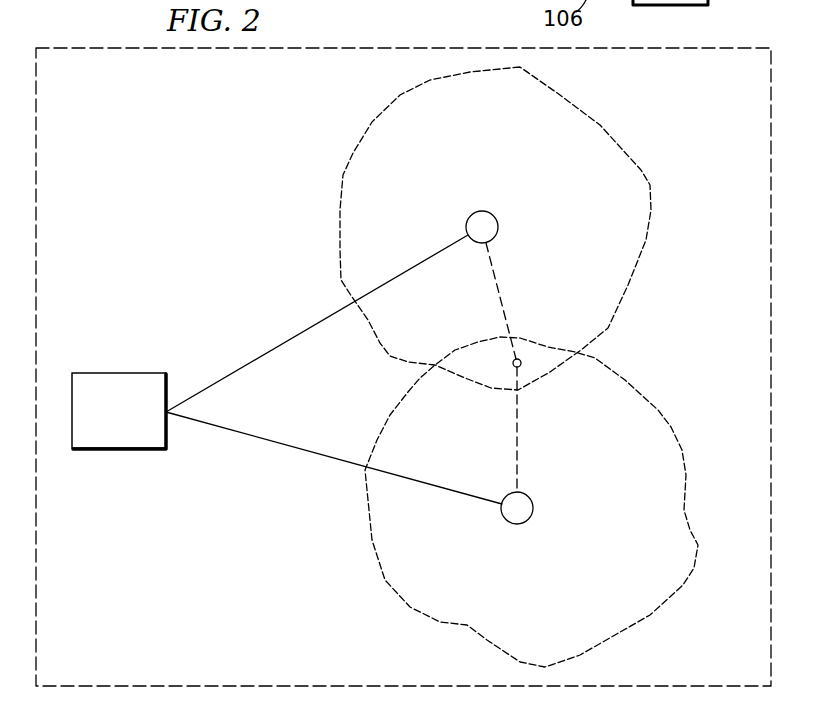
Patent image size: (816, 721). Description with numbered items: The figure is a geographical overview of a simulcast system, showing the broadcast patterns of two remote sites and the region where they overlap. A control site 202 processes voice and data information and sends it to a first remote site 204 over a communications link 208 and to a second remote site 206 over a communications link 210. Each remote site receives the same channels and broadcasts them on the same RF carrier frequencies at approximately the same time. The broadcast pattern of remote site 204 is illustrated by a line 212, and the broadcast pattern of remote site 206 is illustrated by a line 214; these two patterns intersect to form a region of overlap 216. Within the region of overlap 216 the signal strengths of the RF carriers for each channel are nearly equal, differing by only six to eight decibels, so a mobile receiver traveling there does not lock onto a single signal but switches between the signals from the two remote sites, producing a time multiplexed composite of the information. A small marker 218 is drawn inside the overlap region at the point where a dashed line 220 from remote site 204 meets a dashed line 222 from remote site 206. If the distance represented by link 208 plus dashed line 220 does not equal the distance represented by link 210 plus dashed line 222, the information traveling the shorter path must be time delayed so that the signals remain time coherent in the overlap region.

The control site 202 is at (134, 373).
The remote site 204 is at (498, 227).
The remote site 206 is at (531, 517).
The communications link 208 is at (300, 334).
The communications link 210 is at (298, 447).
The line 212 is at (650, 236).
The line 214 is at (658, 410).
The region of overlap 216 is at (548, 348).
The mobile unit location 218 is at (511, 372).
The dashed line 220 is at (500, 296).
The dashed line 222 is at (519, 438).